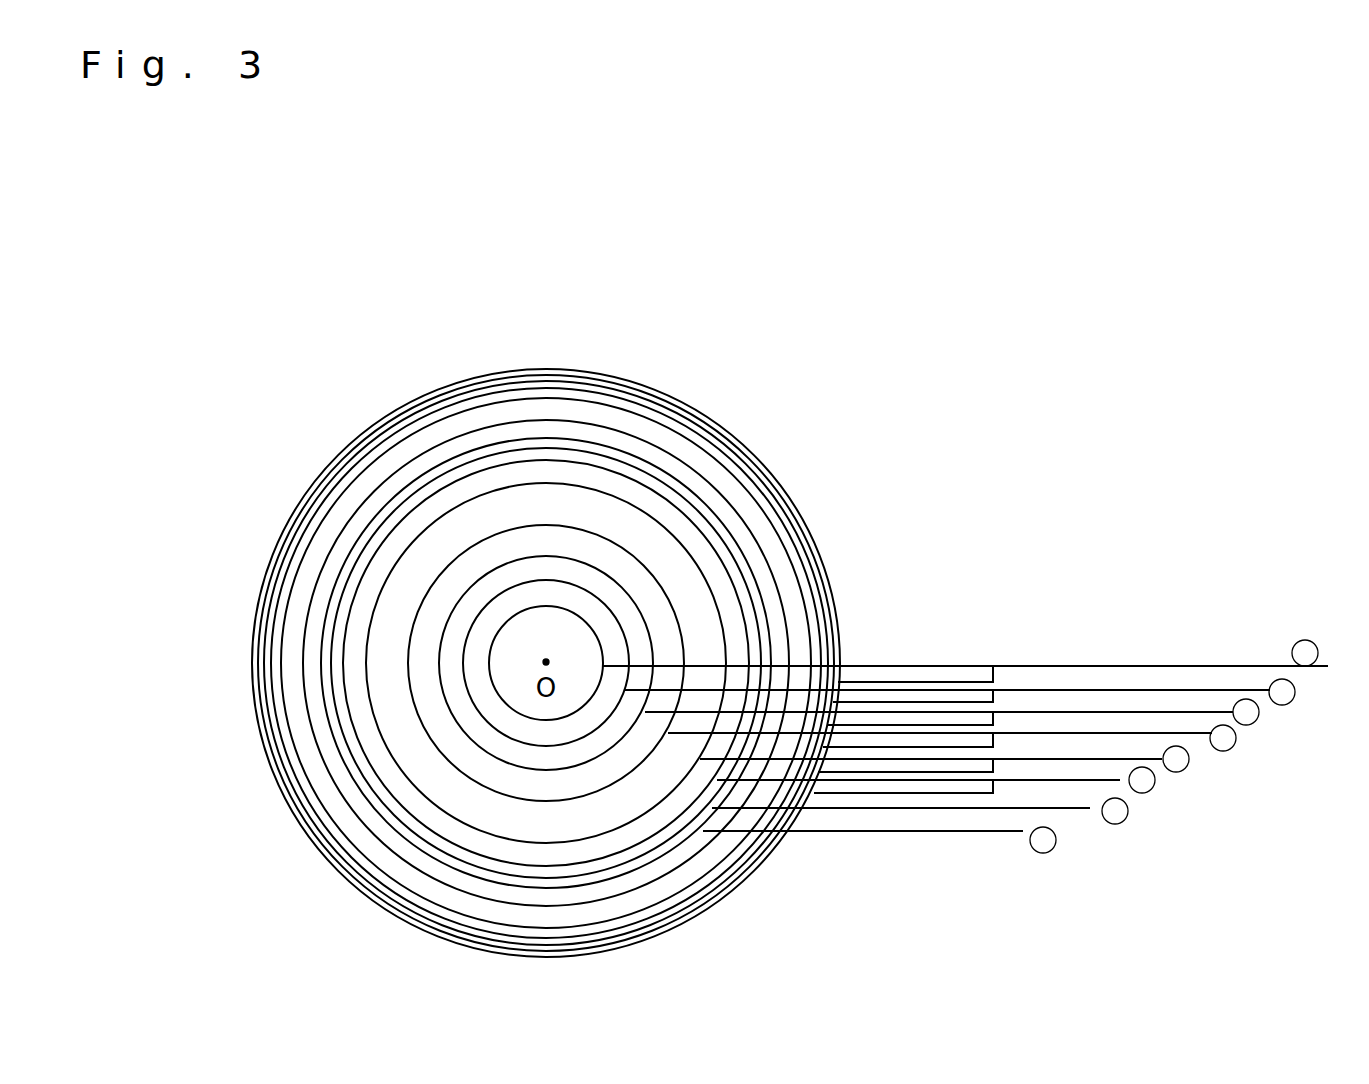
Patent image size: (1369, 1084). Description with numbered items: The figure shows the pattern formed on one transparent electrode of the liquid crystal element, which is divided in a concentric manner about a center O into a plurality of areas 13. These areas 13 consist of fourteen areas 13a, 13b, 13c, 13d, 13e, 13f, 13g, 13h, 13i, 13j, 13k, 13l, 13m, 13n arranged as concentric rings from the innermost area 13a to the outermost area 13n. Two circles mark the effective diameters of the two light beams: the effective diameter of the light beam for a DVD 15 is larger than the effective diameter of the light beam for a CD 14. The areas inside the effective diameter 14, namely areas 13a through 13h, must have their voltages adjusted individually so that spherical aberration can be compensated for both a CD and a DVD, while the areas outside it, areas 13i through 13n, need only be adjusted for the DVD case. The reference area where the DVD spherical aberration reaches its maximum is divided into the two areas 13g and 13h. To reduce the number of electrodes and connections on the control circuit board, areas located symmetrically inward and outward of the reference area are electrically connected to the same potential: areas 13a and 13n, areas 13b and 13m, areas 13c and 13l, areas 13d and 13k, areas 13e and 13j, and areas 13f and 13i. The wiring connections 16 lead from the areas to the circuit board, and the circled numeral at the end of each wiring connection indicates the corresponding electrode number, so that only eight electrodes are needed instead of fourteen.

The areas 13 is at (805, 252).
The area 13a is at (575, 643).
The area 13b is at (588, 602).
The area 13c is at (572, 570).
The area 13d is at (557, 542).
The area 13e is at (530, 507).
The area 13f is at (505, 480).
The area 13g is at (470, 457).
The area 13h is at (453, 447).
The area 13i is at (435, 447).
The area 13j is at (422, 443).
The area 13k is at (382, 450).
The area 13l is at (352, 457).
The area 13m is at (317, 478).
The area 13n is at (288, 507).
The effective diameter of the light beam for a CD 14 is at (753, 575).
The effective diameter of the light beam for a DVD 15 is at (823, 558).
The wiring connections 16 is at (1013, 831).